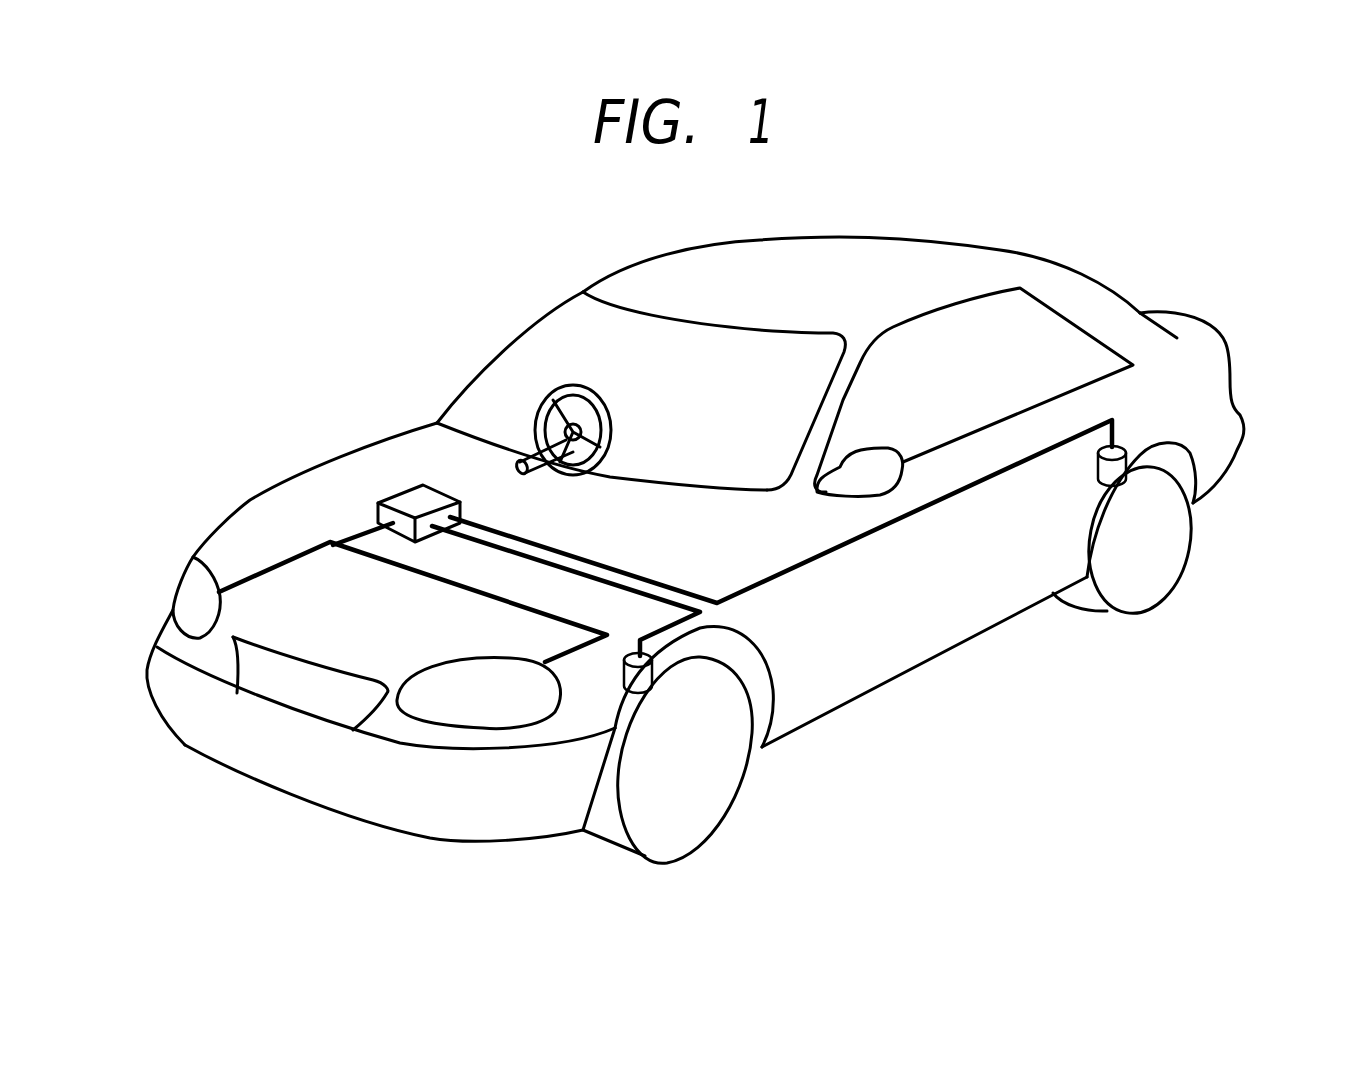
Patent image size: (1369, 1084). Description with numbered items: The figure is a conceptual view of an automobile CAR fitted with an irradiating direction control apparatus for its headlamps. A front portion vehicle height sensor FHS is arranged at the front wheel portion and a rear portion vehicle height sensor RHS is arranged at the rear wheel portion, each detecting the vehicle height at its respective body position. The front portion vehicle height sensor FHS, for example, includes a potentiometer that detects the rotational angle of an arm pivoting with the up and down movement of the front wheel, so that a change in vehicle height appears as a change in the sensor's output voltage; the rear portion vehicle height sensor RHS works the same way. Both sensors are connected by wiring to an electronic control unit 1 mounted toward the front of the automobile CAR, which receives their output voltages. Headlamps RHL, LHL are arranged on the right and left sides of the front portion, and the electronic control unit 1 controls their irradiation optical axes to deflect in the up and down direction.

The electronic control unit 1 is at (412, 498).
The automobile CAR is at (895, 238).
The right headlamp RHL is at (183, 582).
The left headlamp LHL is at (480, 713).
The front portion vehicle height sensor FHS is at (635, 688).
The rear portion vehicle height sensor RHS is at (1127, 447).